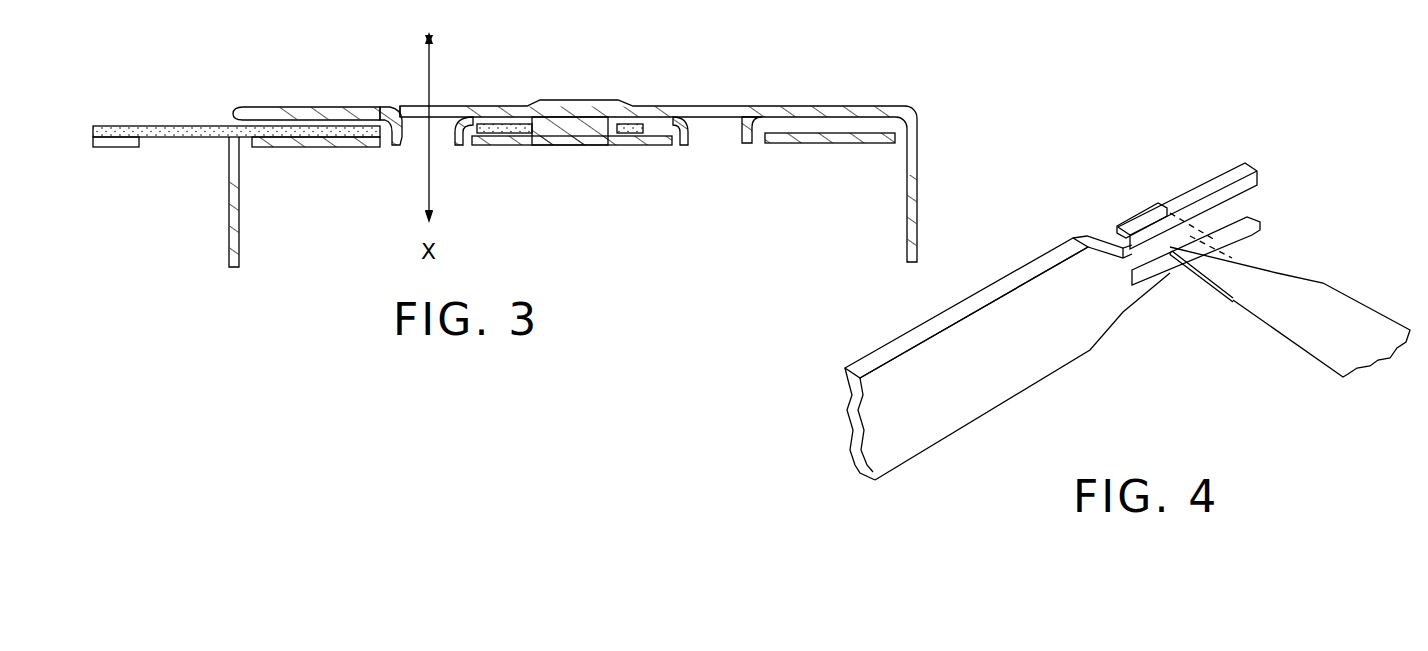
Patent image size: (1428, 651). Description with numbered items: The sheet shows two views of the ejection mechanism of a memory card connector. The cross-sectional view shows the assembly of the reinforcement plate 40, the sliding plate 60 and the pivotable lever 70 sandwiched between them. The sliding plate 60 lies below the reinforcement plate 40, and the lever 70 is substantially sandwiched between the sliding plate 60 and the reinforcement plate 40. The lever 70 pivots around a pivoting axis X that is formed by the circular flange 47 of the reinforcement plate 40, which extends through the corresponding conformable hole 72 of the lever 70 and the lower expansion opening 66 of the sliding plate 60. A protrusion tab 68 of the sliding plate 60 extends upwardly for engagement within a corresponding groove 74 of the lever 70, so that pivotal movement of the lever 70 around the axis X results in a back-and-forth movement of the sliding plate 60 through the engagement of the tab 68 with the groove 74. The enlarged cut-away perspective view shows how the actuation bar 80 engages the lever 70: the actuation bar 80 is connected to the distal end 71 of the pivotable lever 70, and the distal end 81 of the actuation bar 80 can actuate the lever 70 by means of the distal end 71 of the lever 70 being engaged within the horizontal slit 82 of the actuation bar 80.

In FIG. 3, the reinforcement plate 40 is at (652, 107).
In FIG. 3, the circular flange 47 is at (406, 105).
In FIG. 3, the sliding plate 60 is at (520, 146).
In FIG. 3, the lower expansion opening 66 is at (383, 146).
In FIG. 3, the protrusion tab 68 is at (576, 120).
In FIG. 3, the pivotable lever 70 is at (165, 125).
In FIG. 4, the pivotable lever 70 is at (1348, 315).
In FIG. 3, the distal end 71 is at (133, 147).
In FIG. 4, the distal end 71 is at (1205, 288).
In FIG. 3, the conformable hole 72 is at (385, 120).
In FIG. 3, the groove 74 is at (532, 125).
In FIG. 4, the actuation bar 80 is at (983, 387).
In FIG. 4, the distal end 81 is at (1207, 192).
In FIG. 4, the horizontal slit 82 is at (1145, 272).